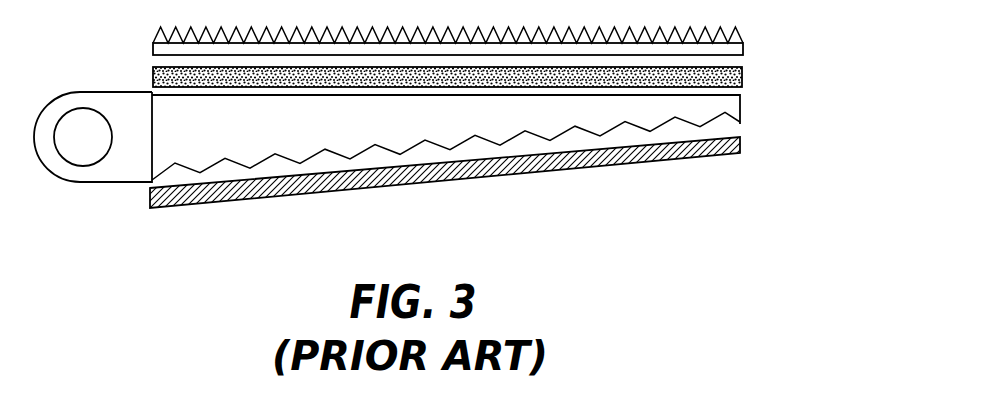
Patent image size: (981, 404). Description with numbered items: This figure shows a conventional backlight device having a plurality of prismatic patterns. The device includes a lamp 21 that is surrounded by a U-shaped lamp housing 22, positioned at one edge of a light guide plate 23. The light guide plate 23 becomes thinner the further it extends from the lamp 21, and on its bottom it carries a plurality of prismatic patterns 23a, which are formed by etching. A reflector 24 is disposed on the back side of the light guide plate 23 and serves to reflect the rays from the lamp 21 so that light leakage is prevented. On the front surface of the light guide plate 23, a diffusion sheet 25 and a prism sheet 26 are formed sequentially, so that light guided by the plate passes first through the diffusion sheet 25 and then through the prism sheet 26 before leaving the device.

The lamp 21 is at (72, 109).
The U-shaped lamp housing 22 is at (88, 183).
The light guide plate 23 is at (725, 111).
The prismatic patterns 23a is at (397, 148).
The reflector 24 is at (740, 145).
The diffusion sheet 25 is at (742, 78).
The prism sheet 26 is at (752, 32).